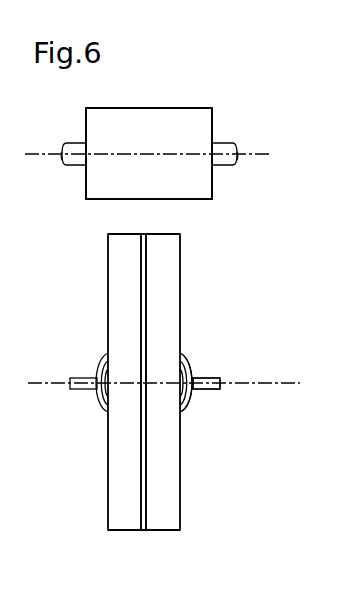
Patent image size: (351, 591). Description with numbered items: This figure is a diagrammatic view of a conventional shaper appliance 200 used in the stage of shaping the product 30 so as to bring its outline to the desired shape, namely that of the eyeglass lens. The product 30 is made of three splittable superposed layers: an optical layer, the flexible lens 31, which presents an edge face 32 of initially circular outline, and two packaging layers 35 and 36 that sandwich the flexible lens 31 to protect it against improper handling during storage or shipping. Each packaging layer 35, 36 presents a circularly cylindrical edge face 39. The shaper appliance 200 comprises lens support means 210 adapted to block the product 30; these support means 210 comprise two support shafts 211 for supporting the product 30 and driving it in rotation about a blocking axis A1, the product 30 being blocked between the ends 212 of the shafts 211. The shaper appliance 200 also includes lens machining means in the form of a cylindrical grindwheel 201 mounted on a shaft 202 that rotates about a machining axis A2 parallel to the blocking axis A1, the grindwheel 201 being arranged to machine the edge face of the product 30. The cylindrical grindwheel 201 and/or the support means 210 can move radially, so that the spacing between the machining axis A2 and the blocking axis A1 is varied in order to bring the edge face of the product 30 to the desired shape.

The shaper appliance 200 is at (165, 88).
The cylindrical grindwheel 201 is at (212, 118).
The shaft 202 is at (218, 163).
The machining axis A2 is at (263, 151).
The product 30 is at (192, 292).
The flexible lens 31 is at (143, 447).
The edge face 32 is at (145, 532).
The packaging layer 35 is at (180, 263).
The packaging layer 36 is at (108, 282).
The circularly cylindrical edge face 39 is at (117, 532).
The lens support means 210 is at (201, 359).
The support shaft 211 is at (88, 376).
The end 212 is at (100, 403).
The blocking axis A1 is at (288, 383).